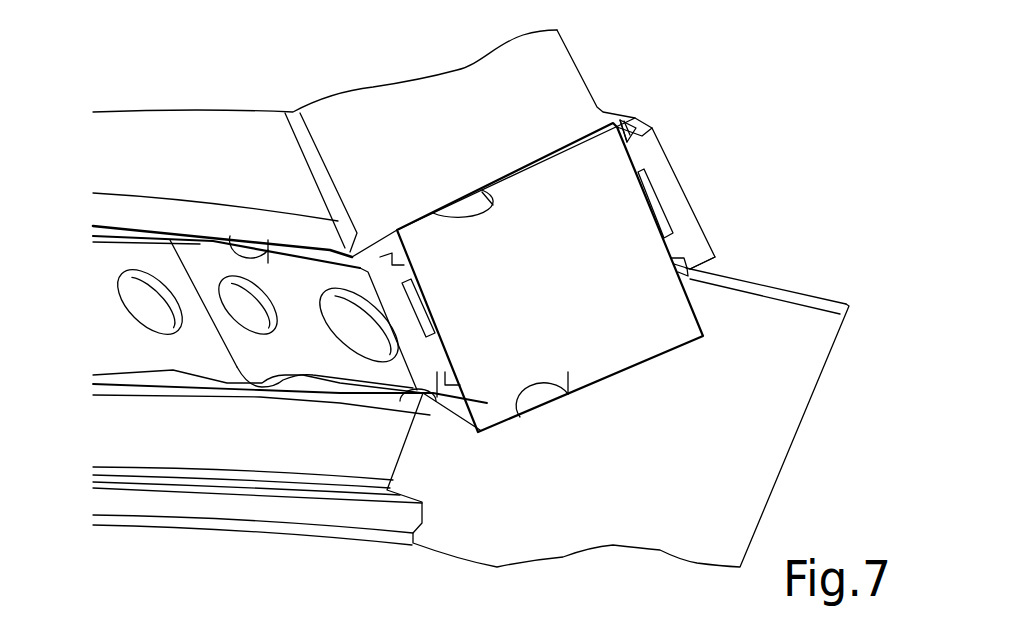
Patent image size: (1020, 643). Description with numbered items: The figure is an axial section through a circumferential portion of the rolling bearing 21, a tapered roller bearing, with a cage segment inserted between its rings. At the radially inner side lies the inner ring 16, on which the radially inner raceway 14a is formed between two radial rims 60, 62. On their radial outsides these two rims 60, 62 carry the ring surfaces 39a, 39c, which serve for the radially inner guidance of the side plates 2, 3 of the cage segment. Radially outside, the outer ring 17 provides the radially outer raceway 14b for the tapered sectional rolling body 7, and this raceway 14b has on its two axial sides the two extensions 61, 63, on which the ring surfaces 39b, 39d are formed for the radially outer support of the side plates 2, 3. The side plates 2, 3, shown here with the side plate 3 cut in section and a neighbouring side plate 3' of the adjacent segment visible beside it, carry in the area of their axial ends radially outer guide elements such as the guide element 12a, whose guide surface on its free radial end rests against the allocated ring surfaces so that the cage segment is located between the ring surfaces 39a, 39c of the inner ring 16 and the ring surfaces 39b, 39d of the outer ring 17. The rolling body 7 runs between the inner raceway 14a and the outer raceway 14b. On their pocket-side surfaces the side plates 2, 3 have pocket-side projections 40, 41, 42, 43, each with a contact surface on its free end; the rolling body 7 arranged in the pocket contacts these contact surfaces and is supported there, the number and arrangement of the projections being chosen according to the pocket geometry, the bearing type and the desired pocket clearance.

The rolling bearing 21 is at (776, 86).
The radially outer guide element 12a is at (170, 234).
The outer ring 17 is at (506, 108).
The axial extension 61 is at (284, 108).
The tapered rolling body 7 is at (556, 291).
The radially outer raceway 14b is at (433, 207).
The radially inner raceway 14a is at (523, 418).
The axial extension 63 is at (616, 118).
The side plate 2 is at (692, 212).
The ring surface 39d is at (642, 136).
The pocket-side projection 40 is at (621, 165).
The pocket-side projection 41 is at (670, 255).
The ring surface 39c is at (692, 266).
The radial rim 62 is at (707, 292).
The inner ring 16 is at (666, 471).
The pocket-side projection 42 is at (406, 266).
The pocket-side projection 43 is at (443, 350).
The ring surface 39a is at (392, 408).
The ring surface 39b is at (229, 236).
The radial rim 60 is at (440, 418).
The side plate 3 is at (258, 316).
The adjacent perforated plate 3' is at (148, 302).